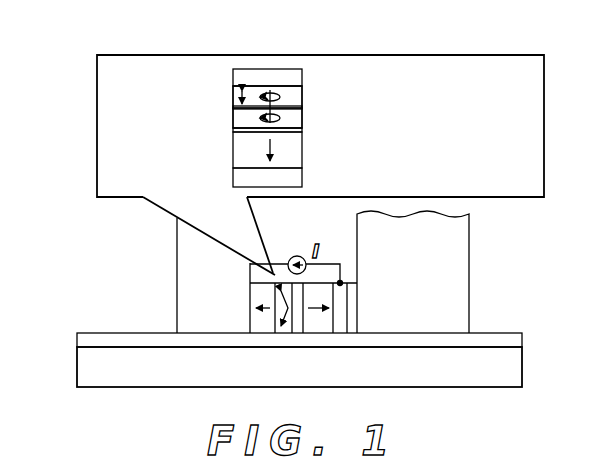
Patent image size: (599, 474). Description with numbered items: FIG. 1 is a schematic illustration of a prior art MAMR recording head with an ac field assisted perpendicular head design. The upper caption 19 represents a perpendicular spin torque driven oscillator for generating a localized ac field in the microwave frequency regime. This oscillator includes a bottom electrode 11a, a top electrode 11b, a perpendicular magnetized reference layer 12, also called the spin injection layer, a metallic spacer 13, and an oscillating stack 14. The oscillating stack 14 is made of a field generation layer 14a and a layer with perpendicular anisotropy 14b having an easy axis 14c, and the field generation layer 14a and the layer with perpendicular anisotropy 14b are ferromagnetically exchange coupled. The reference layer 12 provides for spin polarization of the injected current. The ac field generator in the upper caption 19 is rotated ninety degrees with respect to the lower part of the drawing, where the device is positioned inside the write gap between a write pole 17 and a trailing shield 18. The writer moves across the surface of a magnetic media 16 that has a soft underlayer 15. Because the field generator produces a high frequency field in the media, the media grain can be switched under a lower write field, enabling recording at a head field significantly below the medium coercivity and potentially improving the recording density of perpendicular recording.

The upper caption 19 is at (66, 64).
The top electrode 11b is at (302, 80).
The layer with perpendicular anisotropy 14b is at (302, 101).
The field generation layer 14a is at (302, 120).
The easy axis 14c is at (233, 91).
The oscillating stack 14 is at (235, 89).
The metallic spacer 13 is at (233, 133).
The perpendicular magnetized reference layer 12 is at (302, 152).
The bottom electrode 11a is at (302, 178).
The write pole 17 is at (185, 276).
The trailing shield 18 is at (469, 262).
The magnetic media 16 is at (512, 338).
The soft underlayer 15 is at (512, 370).